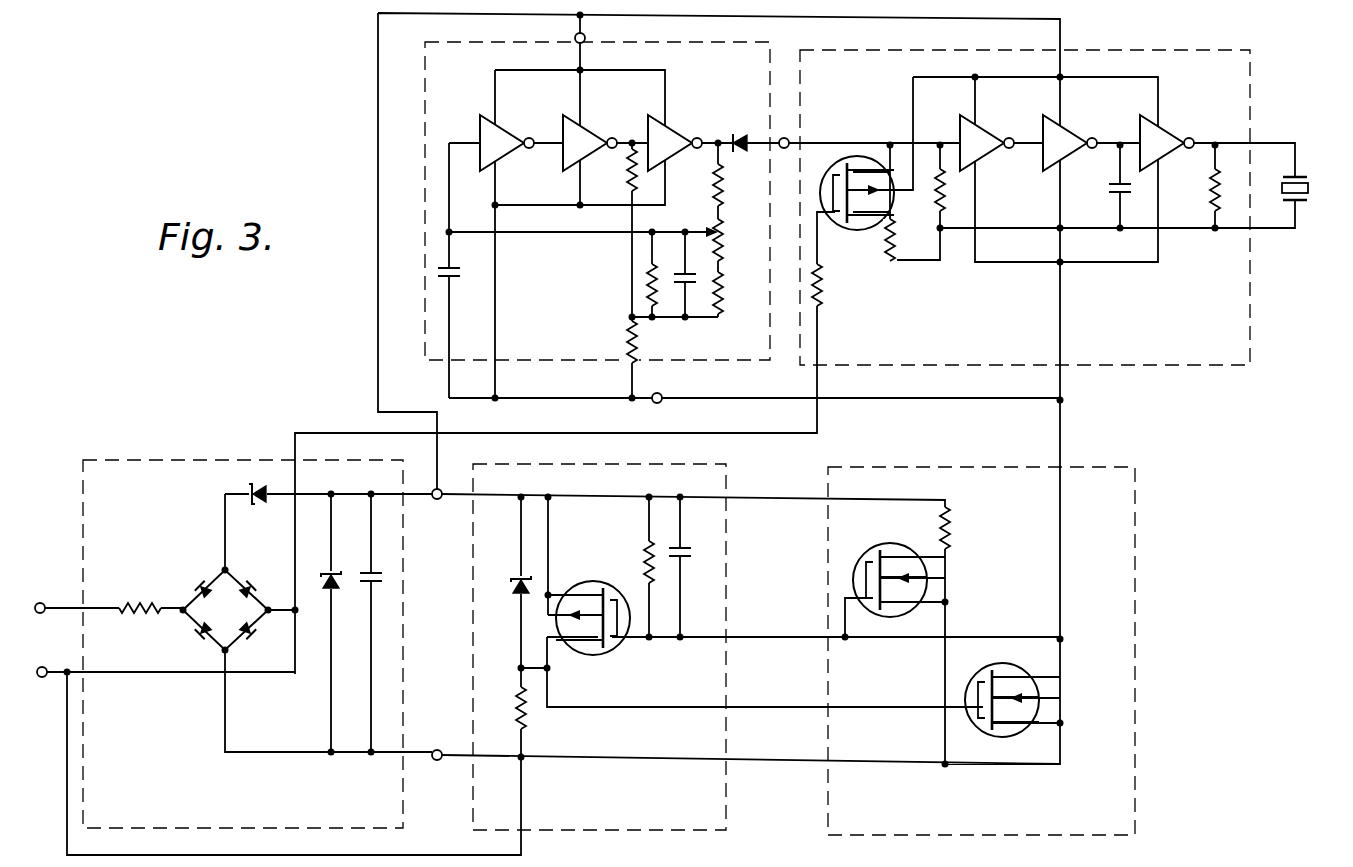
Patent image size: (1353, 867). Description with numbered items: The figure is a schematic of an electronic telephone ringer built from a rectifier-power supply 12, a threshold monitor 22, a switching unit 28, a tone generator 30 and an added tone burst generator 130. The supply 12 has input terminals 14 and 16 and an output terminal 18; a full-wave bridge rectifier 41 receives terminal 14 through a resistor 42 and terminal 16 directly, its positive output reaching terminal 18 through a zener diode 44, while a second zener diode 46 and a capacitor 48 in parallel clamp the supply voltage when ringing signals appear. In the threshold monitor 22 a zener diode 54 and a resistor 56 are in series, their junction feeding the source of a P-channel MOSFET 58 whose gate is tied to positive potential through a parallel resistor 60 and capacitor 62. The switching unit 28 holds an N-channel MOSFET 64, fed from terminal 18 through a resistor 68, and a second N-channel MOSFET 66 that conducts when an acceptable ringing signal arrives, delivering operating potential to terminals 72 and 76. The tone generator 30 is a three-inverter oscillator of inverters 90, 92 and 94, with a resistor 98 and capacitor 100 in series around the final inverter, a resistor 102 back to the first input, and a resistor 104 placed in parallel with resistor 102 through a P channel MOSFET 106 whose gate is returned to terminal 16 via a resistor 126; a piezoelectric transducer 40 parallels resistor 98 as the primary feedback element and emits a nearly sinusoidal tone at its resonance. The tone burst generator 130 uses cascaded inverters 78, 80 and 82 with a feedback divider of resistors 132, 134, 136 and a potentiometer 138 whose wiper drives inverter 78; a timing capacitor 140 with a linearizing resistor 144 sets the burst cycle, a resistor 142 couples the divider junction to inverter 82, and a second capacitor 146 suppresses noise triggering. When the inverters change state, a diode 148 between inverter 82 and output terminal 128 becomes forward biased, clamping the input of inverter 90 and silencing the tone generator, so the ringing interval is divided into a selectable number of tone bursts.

The rectifier-power supply circuit 12 is at (243, 644).
The input terminal 14 is at (42, 600).
The input terminal 16 is at (40, 678).
The output terminal 18 is at (437, 500).
The threshold monitor circuit 22 is at (599, 647).
The switching unit 28 is at (981, 651).
The tone generator circuit 30 is at (1025, 207).
The piezoelectric transducer 40 is at (1308, 188).
The full-wave semiconductor bridge rectifier 41 is at (225, 610).
The resistor 42 is at (142, 600).
The zener diode 44 is at (260, 504).
The second zener diode 46 is at (323, 588).
The capacitor 48 is at (366, 570).
The zener diode 54 is at (513, 590).
The resistor 56 is at (516, 712).
The P-channel enhancement mode MOSFET 58 is at (590, 580).
The resistor 60 is at (645, 560).
The capacitor 62 is at (683, 558).
The N-channel enhancement mode MOSFET 64 is at (880, 545).
The second N-channel enhancement mode MOSFET 66 is at (998, 665).
The resistor 68 is at (950, 530).
The terminal 72 is at (586, 38).
The terminal 76 is at (663, 396).
The inverter circuit 78 is at (508, 125).
The inverter circuit 80 is at (595, 130).
The inverter circuit 82 is at (678, 118).
The inverter circuit 90 is at (990, 128).
The inverter circuit 92 is at (1075, 128).
The final inverter 94 is at (1170, 128).
The resistor 98 is at (1210, 195).
The capacitor 100 is at (1114, 195).
The resistor 102 is at (934, 205).
The resistor 104 is at (883, 260).
The P channel MOSFET 106 is at (852, 232).
The resistor 126 is at (822, 290).
The output terminal 128 is at (784, 137).
The tone burst generator 130 is at (597, 201).
The resistor 132 is at (723, 188).
The resistor 134 is at (723, 296).
The resistor 136 is at (637, 340).
The potentiometer 138 is at (723, 243).
The timing capacitor 140 is at (688, 272).
The resistor 142 is at (625, 172).
The resistor 144 is at (646, 282).
The second capacitor 146 is at (452, 280).
The diode 148 is at (742, 132).